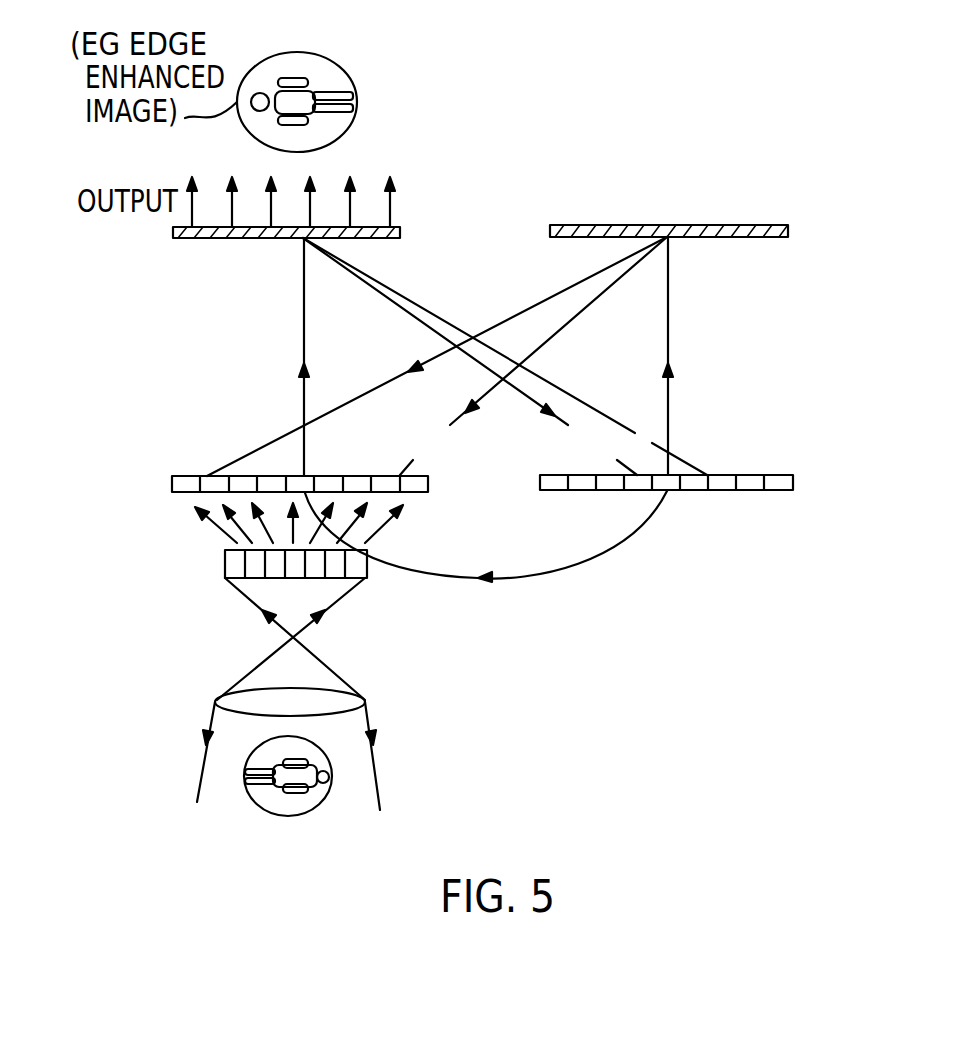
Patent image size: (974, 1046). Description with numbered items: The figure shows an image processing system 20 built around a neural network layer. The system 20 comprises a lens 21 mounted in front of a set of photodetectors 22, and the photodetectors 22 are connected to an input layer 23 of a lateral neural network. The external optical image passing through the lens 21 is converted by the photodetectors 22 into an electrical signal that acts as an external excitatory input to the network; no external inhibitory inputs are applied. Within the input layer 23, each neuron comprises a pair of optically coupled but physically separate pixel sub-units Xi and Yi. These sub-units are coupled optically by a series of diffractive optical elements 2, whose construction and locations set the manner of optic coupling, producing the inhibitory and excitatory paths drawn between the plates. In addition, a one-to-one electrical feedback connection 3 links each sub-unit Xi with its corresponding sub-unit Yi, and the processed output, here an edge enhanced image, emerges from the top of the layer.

The diffractive optical element 2 is at (400, 227).
The electrical feedback connection 3 is at (565, 570).
The image processing system 20 is at (167, 699).
The lens 21 is at (367, 698).
The photodetectors 22 is at (225, 566).
The input layer 23 is at (855, 233).